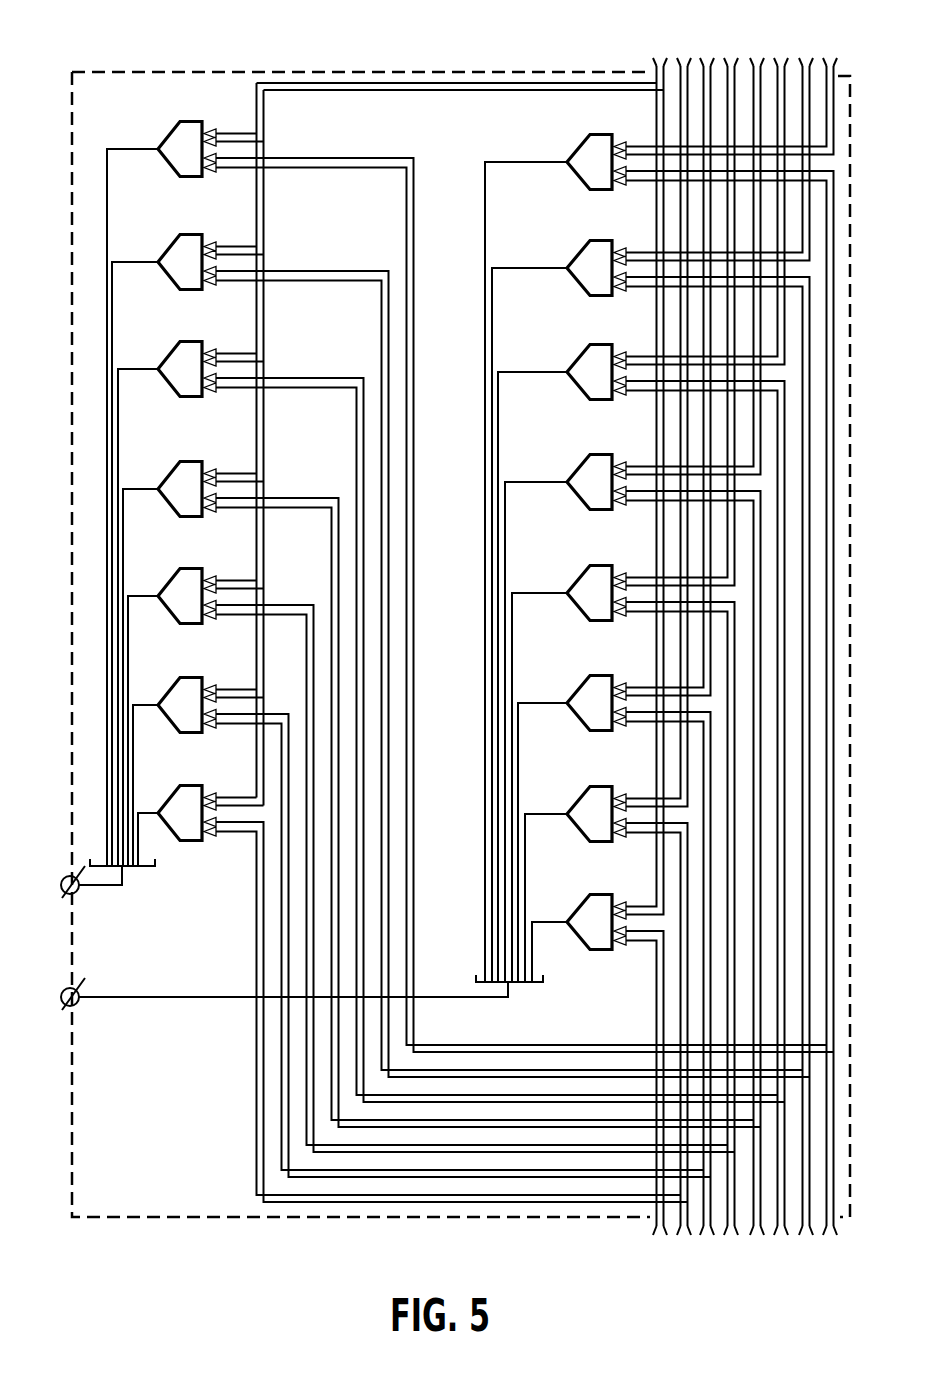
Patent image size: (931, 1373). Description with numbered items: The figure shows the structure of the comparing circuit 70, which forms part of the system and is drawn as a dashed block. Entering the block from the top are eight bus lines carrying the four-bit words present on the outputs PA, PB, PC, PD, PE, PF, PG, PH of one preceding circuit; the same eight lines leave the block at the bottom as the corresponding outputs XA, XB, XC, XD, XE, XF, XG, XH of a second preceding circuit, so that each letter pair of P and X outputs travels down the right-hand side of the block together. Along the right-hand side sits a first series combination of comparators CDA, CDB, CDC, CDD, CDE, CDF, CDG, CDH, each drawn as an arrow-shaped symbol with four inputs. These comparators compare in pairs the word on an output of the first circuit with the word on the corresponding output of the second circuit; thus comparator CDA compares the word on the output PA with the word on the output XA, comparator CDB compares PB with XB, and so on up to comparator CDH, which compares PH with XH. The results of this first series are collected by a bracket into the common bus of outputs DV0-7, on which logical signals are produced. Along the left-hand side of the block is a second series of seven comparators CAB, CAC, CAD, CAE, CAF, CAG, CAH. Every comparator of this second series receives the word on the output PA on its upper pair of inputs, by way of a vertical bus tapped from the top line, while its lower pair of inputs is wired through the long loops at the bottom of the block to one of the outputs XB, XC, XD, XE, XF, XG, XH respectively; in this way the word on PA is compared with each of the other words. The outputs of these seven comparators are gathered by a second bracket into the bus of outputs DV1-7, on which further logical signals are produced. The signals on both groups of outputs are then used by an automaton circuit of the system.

The comparing circuit 70 is at (134, 1217).
The comparator CAH is at (168, 169).
The comparator CAG is at (168, 279).
The comparator CAF is at (168, 384).
The comparator CAE is at (168, 504).
The comparator CAD is at (174, 617).
The comparator CAC is at (174, 727).
The comparator CAB is at (184, 843).
The comparator CDH is at (582, 186).
The comparator CDG is at (582, 296).
The comparator CDF is at (588, 401).
The comparator CDE is at (590, 506).
The comparator CDD is at (592, 616).
The comparator CDC is at (596, 724).
The comparator CDB is at (600, 836).
The comparator CDA is at (596, 952).
The outputs DV1-7 is at (80, 896).
The outputs DV0-7 is at (74, 1006).
The output PA is at (654, 58).
The output PB is at (681, 58).
The output PC is at (700, 60).
The output PD is at (724, 58).
The output PE is at (753, 60).
The output PF is at (776, 58).
The output PG is at (803, 60).
The output PH is at (828, 58).
The output XA is at (656, 1236).
The output XB is at (681, 1236).
The output XC is at (703, 1236).
The output XD is at (728, 1236).
The output XE is at (753, 1236).
The output XF is at (778, 1236).
The output XG is at (803, 1236).
The output XH is at (827, 1236).